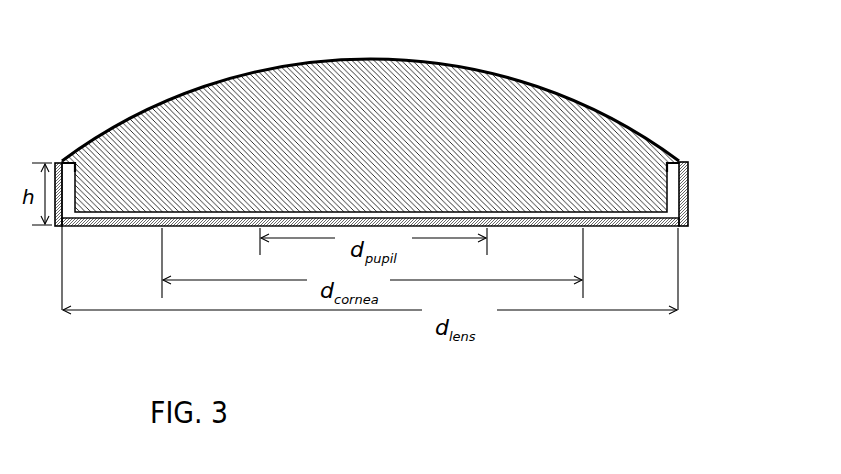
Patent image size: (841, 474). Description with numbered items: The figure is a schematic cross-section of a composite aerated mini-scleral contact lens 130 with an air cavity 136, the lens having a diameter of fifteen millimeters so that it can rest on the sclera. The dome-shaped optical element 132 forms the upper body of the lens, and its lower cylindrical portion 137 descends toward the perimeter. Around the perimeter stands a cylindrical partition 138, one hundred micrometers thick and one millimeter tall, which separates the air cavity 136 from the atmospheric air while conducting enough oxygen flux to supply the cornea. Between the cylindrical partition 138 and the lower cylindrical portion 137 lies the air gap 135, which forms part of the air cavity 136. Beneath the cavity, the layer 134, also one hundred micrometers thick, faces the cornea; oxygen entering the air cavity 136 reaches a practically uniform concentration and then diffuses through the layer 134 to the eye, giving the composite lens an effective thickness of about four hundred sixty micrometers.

The lens 130 is at (370, 109).
The optical element 132 is at (502, 82).
The layer 134 is at (370, 248).
The air gap 135 is at (62, 161).
The air cavity 136 is at (578, 210).
The lower cylindrical portion 137 is at (180, 177).
The cylindrical partition 138 is at (60, 228).